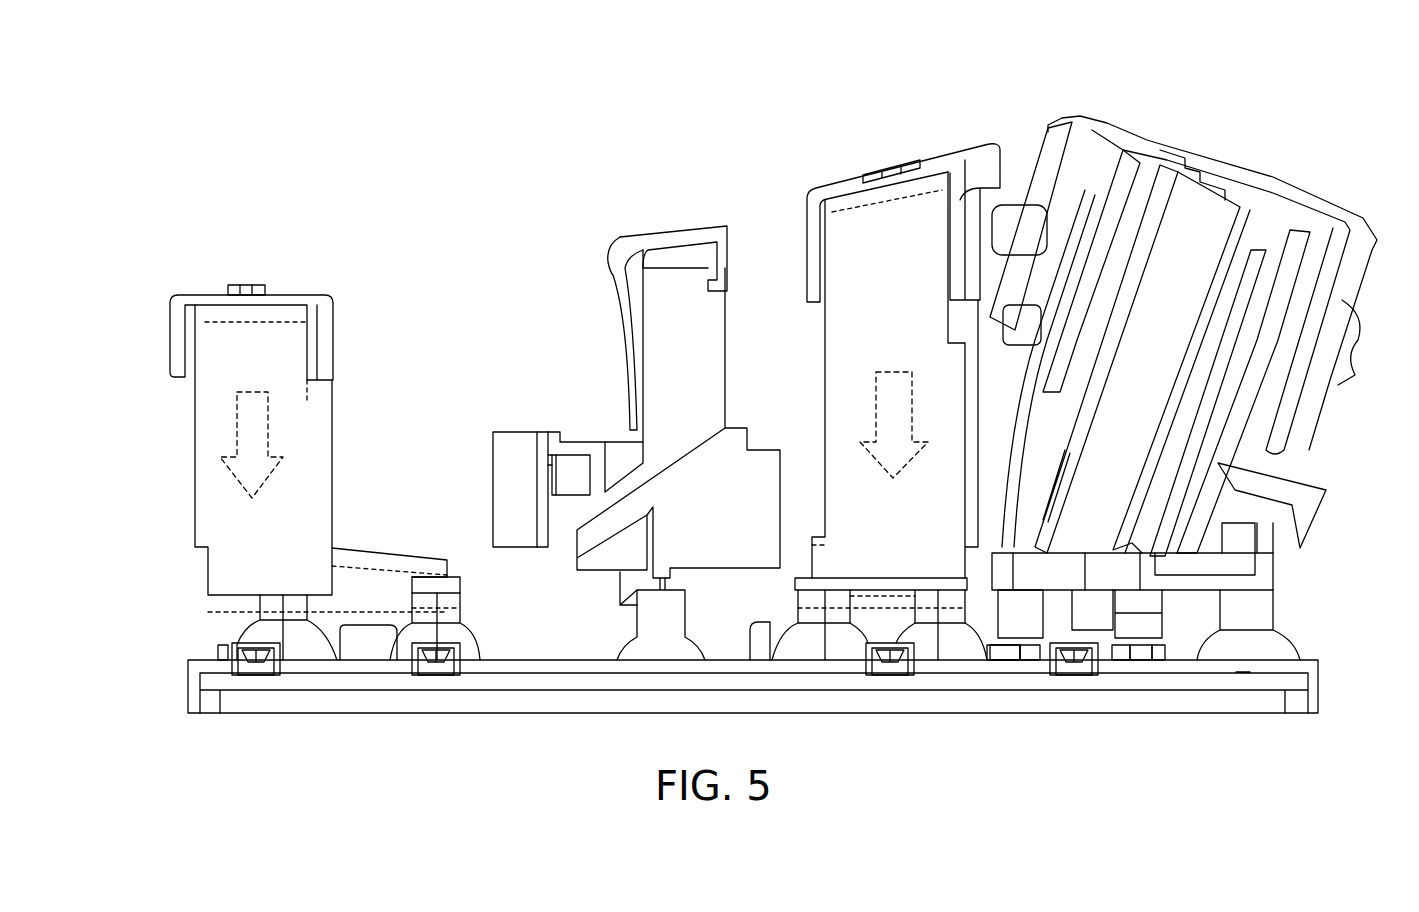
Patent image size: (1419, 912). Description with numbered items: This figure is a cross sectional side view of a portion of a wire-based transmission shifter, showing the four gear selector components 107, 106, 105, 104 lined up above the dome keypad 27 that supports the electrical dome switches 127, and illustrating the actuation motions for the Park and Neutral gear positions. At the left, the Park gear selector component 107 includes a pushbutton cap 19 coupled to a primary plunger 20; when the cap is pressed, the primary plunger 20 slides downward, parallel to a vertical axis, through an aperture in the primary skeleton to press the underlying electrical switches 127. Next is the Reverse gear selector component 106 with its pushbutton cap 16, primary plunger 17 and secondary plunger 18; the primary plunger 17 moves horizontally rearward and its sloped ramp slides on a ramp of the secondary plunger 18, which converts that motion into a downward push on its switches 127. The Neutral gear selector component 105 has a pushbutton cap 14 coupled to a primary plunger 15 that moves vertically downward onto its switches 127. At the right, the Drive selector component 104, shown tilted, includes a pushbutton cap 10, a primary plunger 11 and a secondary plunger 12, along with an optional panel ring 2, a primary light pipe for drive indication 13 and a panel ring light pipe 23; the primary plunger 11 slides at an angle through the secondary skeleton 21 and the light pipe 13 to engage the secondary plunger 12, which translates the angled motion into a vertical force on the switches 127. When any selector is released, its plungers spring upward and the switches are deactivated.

The panel ring 2 is at (1375, 240).
The pushbutton cap 10 is at (1318, 205).
The primary plunger 11 is at (1192, 207).
The secondary plunger 12 is at (1268, 565).
The primary light pipe for drive indication 13 is at (1195, 490).
The pushbutton cap 14 is at (950, 160).
The primary plunger 15 is at (840, 332).
The pushbutton cap 16 is at (627, 243).
The primary plunger 17 is at (713, 343).
The secondary plunger 18 is at (737, 521).
The pushbutton cap 19 is at (323, 305).
The primary plunger 20 is at (207, 440).
The secondary skeleton 21 is at (1313, 503).
The panel ring light pipe 23 is at (1350, 338).
The dome keypad 27 is at (1310, 660).
The Drive selector component 104 is at (1204, 310).
The Neutral gear selector component 105 is at (881, 334).
The Reverse gear selector component 106 is at (636, 355).
The Park gear selector component 107 is at (287, 404).
The electrical dome switches 127 is at (245, 640).